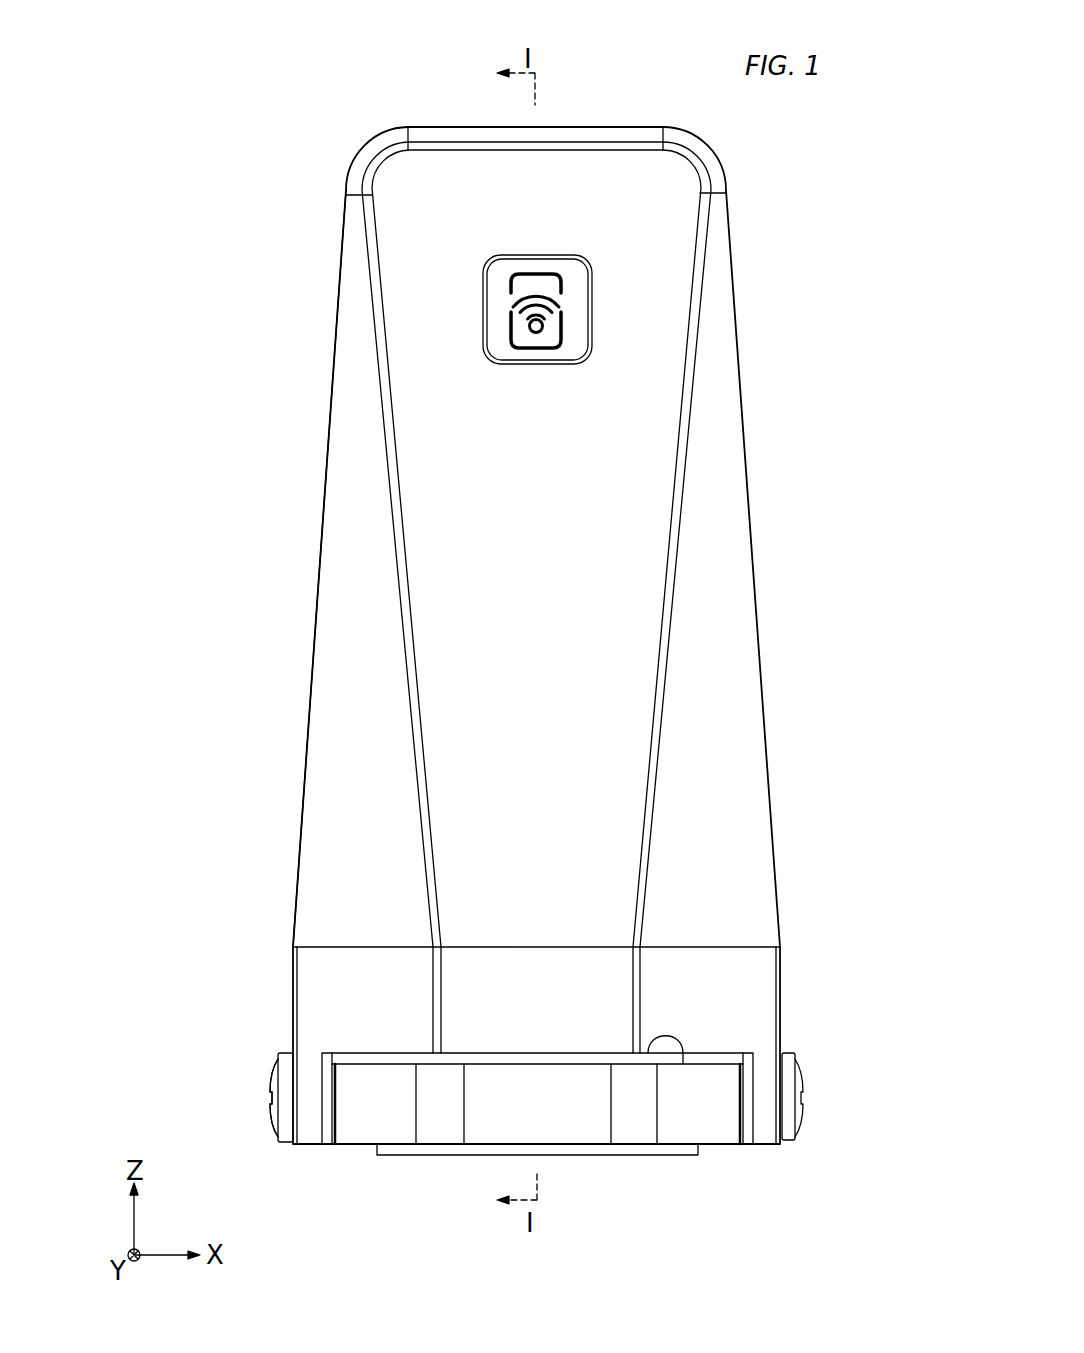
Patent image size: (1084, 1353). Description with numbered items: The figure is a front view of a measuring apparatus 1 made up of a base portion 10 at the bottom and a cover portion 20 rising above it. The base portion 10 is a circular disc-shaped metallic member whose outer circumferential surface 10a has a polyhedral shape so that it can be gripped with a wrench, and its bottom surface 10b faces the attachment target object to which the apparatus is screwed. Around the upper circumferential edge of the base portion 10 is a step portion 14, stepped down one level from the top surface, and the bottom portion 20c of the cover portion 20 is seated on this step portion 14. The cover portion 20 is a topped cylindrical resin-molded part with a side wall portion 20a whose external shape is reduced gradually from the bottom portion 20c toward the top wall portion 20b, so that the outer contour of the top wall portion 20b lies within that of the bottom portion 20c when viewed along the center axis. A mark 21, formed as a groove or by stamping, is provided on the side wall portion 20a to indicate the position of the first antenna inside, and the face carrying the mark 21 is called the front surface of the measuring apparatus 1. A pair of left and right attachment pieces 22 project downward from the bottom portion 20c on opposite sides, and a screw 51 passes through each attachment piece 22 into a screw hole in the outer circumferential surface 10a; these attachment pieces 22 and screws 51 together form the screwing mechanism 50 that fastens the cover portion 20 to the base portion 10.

The measuring apparatus 1 is at (290, 123).
The base portion 10 is at (728, 1145).
The outer circumferential surface 10a is at (584, 1120).
The bottom surface 10b is at (460, 1160).
The step portion 14 is at (683, 1064).
The cover portion 20 is at (328, 440).
The side wall portion 20a is at (315, 572).
The top wall portion 20b is at (460, 124).
The bottom portion 20c is at (287, 993).
The mark 21 is at (475, 313).
The attachment piece 22 is at (293, 1082).
The screwing mechanism 50 is at (252, 1097).
The screw 51 is at (274, 1118).